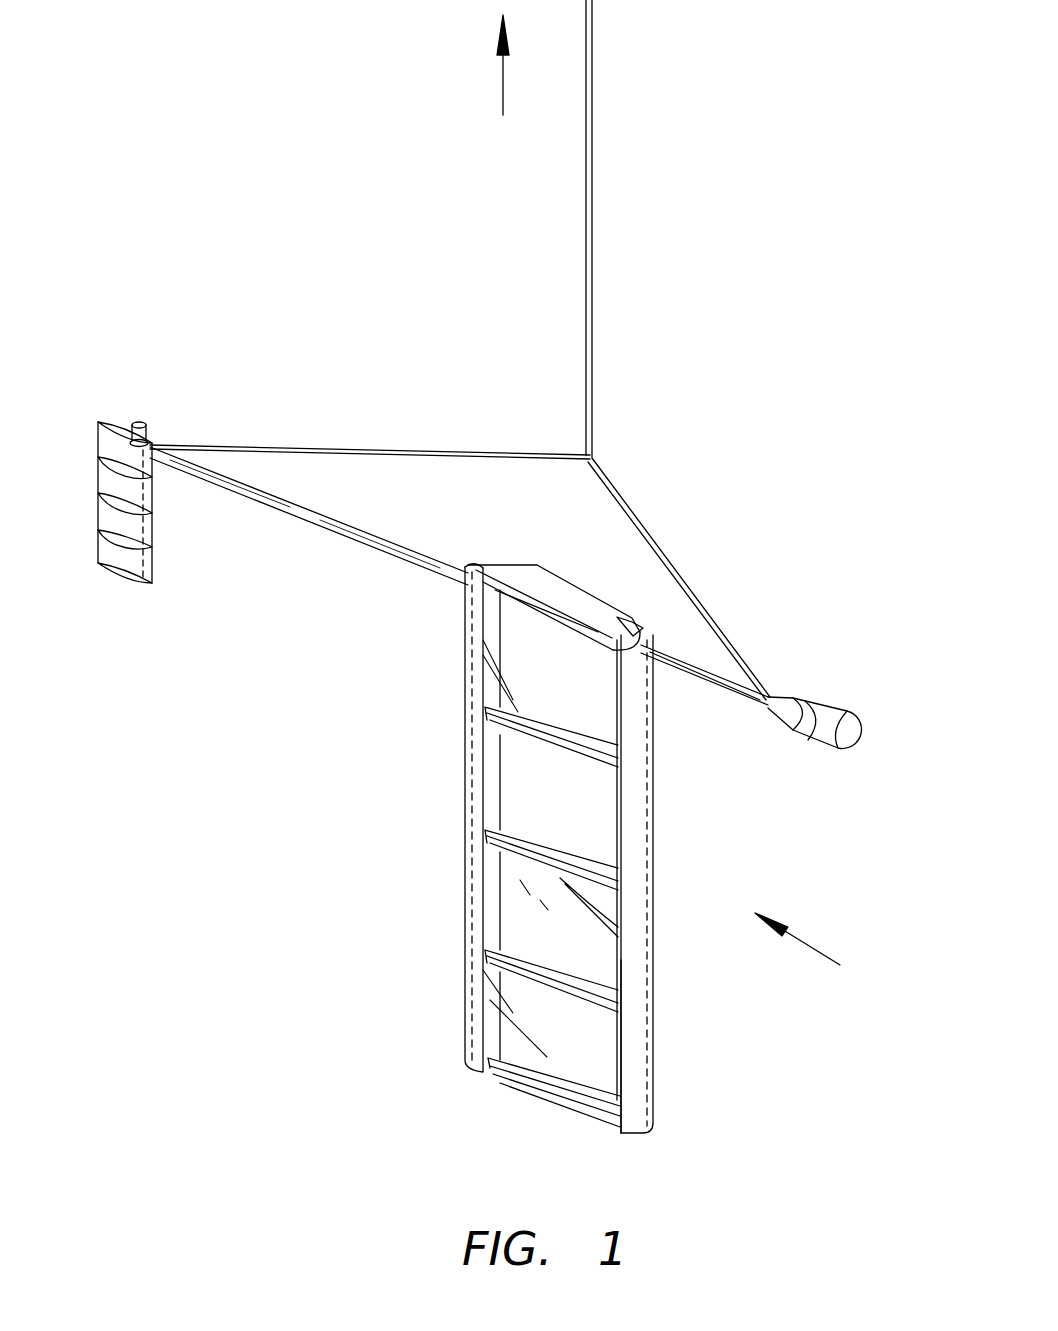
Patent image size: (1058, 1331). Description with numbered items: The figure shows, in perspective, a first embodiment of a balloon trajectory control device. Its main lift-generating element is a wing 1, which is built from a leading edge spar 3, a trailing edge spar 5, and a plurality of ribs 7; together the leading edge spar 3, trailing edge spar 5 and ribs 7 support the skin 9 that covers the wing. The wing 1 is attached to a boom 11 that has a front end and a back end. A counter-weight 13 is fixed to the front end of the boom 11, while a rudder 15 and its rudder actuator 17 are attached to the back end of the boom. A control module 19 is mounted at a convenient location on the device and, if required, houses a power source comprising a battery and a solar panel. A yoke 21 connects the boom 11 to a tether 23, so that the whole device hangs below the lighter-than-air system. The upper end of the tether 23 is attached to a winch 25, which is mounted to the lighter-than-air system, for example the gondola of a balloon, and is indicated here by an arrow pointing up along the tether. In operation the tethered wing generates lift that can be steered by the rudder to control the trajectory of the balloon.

The wing 1 is at (833, 957).
The leading edge spar 3 is at (635, 802).
The trailing edge spar 5 is at (470, 748).
The ribs 7 is at (635, 976).
The skin 9 is at (527, 798).
The boom 11 is at (290, 503).
The counter-weight 13 is at (857, 720).
The rudder 15 is at (115, 520).
The rudder actuator 17 is at (140, 420).
The control module 19 is at (549, 583).
The yoke 21 is at (670, 557).
The tether 23 is at (593, 205).
The winch 25 is at (503, 100).